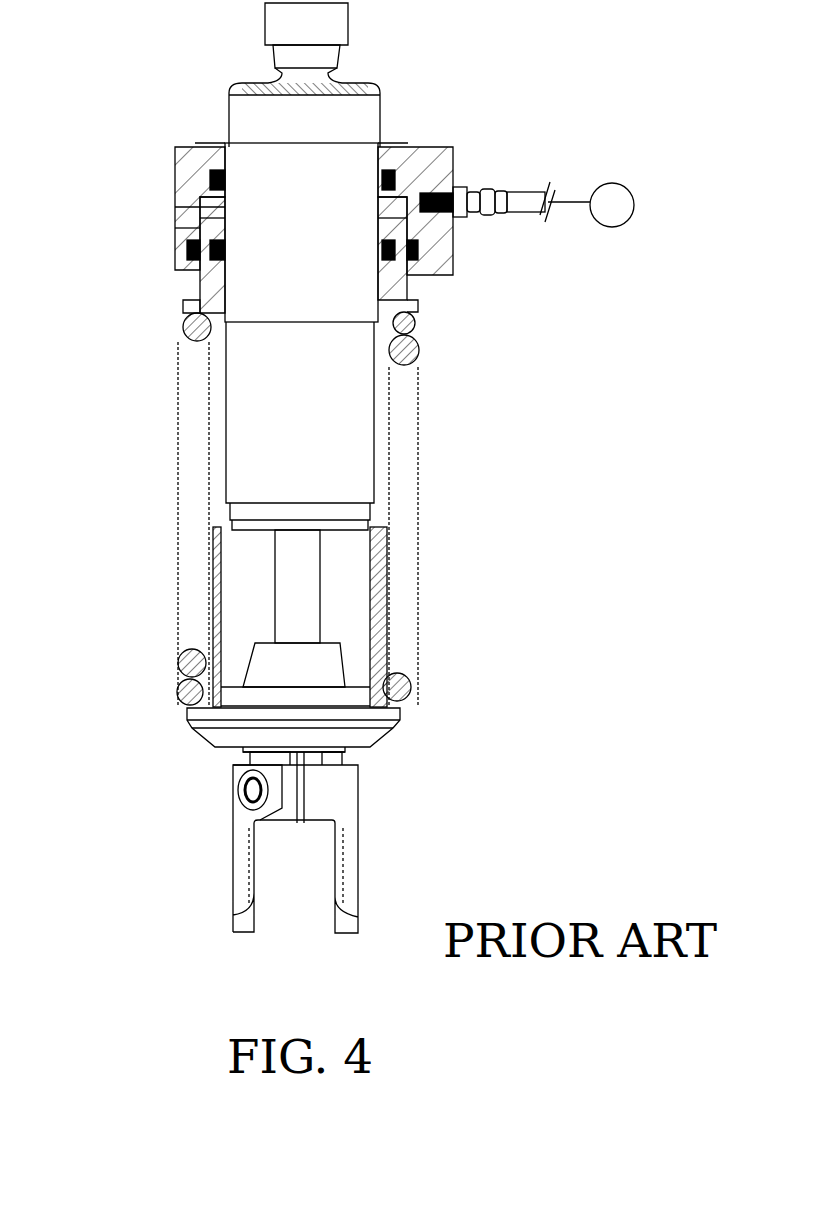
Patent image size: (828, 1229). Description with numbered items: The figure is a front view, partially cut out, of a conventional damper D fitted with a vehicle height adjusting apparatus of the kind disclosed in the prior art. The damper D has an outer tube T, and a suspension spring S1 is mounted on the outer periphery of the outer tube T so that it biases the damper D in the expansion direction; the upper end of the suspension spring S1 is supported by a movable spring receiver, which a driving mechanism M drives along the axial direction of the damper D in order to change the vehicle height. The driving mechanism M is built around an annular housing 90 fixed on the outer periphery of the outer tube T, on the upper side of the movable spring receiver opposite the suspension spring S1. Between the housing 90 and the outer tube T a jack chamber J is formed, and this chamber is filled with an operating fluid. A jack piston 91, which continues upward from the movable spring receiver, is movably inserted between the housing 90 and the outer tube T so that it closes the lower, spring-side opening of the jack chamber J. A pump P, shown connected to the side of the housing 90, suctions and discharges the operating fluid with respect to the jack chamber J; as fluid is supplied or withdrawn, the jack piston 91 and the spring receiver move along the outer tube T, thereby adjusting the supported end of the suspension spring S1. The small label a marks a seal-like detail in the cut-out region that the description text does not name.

The annular housing 90 is at (173, 157).
The jack piston 91 is at (410, 292).
The jack chamber J is at (190, 207).
The driving mechanism M is at (170, 234).
The O-ring seal a is at (183, 310).
The damper D is at (213, 480).
The outer tube T is at (340, 453).
The suspension spring S1 is at (411, 693).
The pump P is at (630, 181).